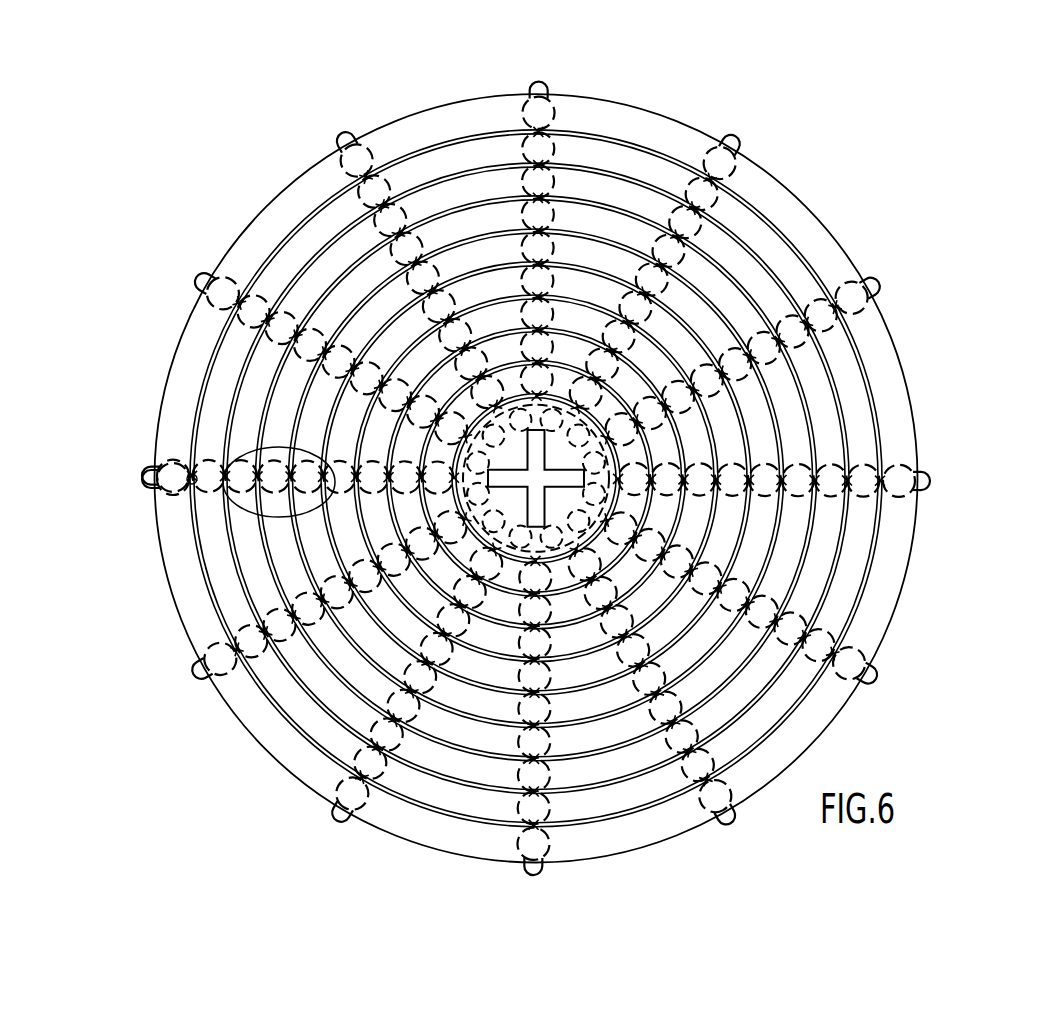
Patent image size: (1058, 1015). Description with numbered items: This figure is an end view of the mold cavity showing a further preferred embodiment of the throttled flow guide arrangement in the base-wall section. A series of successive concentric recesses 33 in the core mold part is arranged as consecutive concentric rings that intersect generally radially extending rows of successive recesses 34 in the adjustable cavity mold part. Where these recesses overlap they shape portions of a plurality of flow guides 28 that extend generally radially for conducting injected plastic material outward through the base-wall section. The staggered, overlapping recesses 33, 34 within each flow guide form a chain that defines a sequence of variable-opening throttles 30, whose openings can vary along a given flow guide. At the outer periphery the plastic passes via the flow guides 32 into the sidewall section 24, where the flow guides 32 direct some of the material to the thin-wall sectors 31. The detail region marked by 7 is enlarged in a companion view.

The sidewall section 24 is at (474, 451).
The radial flow guides 28 is at (704, 138).
The successive concentric recesses 33 is at (225, 373).
The variable-opening throttles 30 is at (188, 470).
The recesses 34 is at (177, 469).
The sidewall-section flow guides 32 is at (143, 473).
The section 7 is at (240, 513).
The thin-wall sectors 31 is at (175, 618).